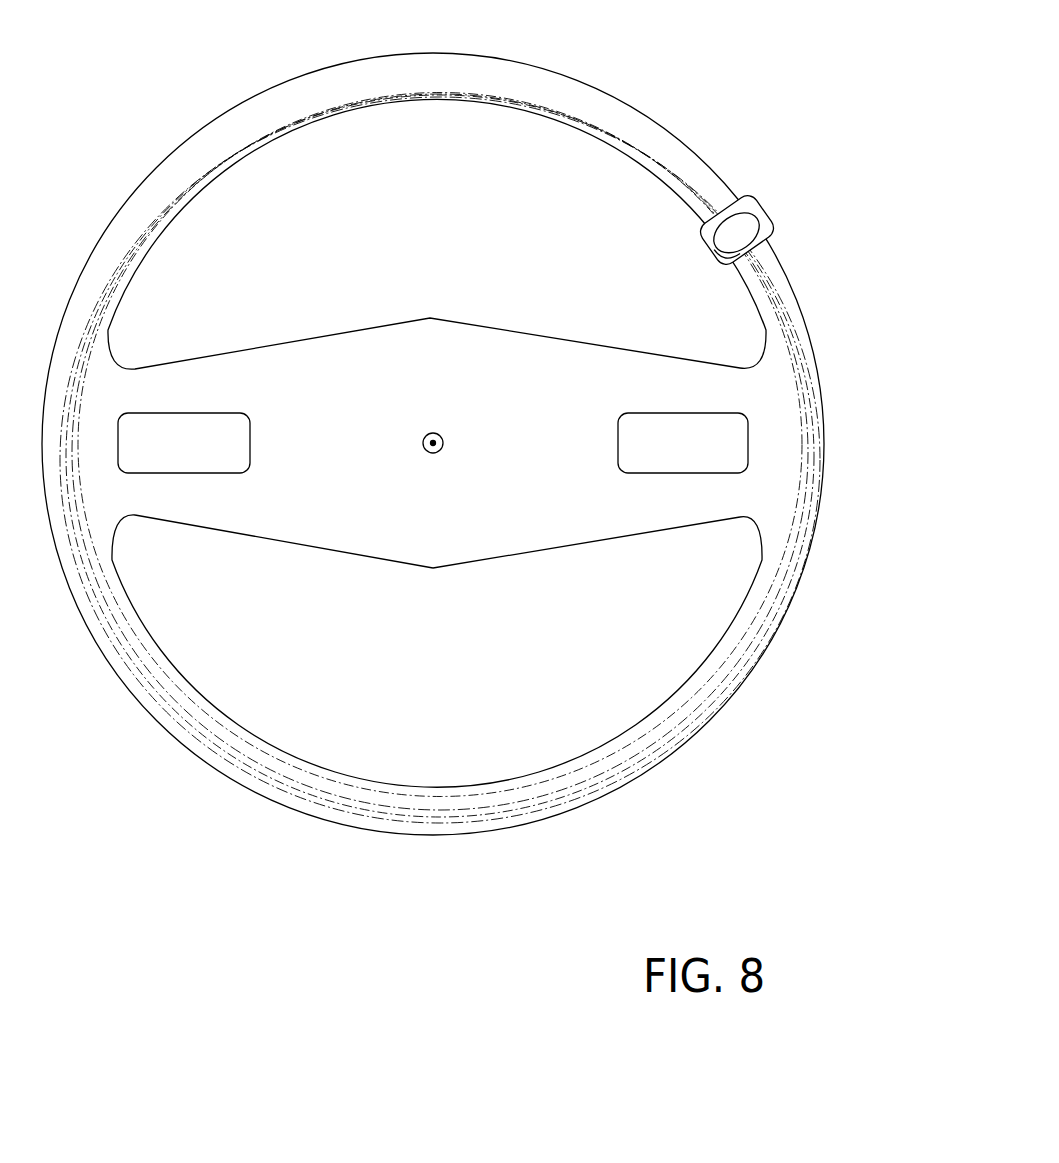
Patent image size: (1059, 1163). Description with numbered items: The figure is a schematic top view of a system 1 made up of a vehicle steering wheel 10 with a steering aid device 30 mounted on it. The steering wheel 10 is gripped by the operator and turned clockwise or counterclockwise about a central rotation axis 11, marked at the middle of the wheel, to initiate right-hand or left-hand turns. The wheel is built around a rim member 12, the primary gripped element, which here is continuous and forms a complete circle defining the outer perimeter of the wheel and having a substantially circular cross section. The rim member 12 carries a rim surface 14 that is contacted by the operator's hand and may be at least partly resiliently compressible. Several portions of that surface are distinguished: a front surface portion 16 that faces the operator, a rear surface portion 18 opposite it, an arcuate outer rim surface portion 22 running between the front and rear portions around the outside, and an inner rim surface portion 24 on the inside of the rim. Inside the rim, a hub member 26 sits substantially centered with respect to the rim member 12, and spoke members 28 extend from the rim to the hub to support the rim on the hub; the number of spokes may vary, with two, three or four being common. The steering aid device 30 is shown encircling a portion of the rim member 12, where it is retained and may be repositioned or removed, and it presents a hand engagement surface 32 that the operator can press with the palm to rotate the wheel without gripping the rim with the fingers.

The system 1 is at (462, 417).
The steering wheel 10 is at (462, 444).
The rotation axis 11 is at (428, 432).
The rim member 12 is at (800, 446).
The rim surface 14 is at (792, 516).
The front surface portion 16 is at (760, 593).
The rear surface portion 18 is at (733, 692).
The outer rim surface portion 22 is at (663, 757).
The inner rim surface portion 24 is at (518, 775).
The hub member 26 is at (405, 545).
The spoke member 28 is at (238, 515).
The steering aid device 30 is at (744, 221).
The hand engagement surface 32 is at (720, 240).